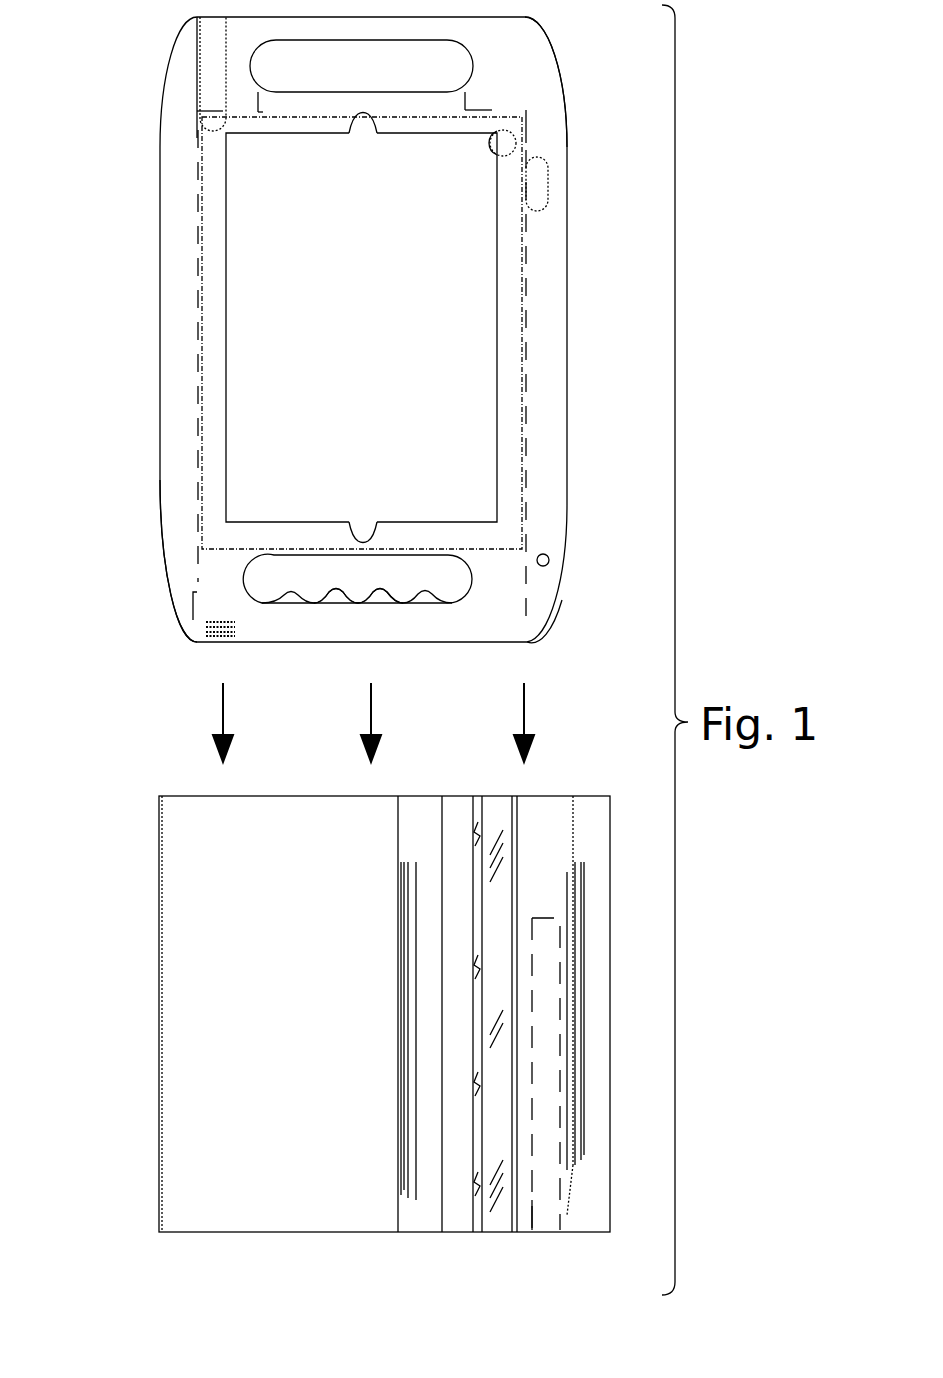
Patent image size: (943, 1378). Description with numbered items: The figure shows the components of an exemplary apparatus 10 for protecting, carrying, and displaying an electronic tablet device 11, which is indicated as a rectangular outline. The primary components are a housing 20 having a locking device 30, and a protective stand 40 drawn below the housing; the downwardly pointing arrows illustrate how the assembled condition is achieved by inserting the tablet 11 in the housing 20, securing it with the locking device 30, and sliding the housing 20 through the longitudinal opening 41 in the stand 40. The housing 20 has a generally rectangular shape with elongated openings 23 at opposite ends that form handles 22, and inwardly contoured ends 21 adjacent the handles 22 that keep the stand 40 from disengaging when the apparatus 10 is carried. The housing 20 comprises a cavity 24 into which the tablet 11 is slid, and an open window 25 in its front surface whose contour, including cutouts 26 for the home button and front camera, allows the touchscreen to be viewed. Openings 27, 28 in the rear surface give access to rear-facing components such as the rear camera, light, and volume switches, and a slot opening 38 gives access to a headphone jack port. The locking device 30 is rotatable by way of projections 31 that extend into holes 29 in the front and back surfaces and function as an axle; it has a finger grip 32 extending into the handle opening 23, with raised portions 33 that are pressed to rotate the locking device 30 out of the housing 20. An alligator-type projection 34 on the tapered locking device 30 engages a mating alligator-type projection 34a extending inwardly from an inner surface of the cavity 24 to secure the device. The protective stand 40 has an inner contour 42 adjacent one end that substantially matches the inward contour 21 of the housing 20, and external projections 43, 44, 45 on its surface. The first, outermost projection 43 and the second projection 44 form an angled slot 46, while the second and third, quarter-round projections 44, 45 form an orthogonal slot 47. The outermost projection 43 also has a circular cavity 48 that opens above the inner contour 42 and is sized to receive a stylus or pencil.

The apparatus 10 is at (149, 677).
The electronic tablet device 11 is at (203, 265).
The housing 20 is at (567, 312).
The inwardly contoured ends 21 is at (556, 601).
The handles 22 is at (577, 61).
The elongated openings 23 is at (367, 321).
The cavity 24 is at (524, 400).
The open window 25 is at (498, 297).
The cutouts 26 is at (364, 132).
The opening 27 is at (551, 172).
The opening 28 is at (492, 150).
The holes 29 is at (576, 538).
The locking device 30 is at (369, 542).
The projections 31 is at (551, 552).
The finger grip 32 is at (357, 603).
The raised portions 33 is at (382, 582).
The alligator-type projection 34 is at (262, 663).
The mating alligator-type projection 34a is at (247, 645).
The slot opening 38 is at (196, 92).
The protective stand 40 is at (611, 1196).
The longitudinal opening 41 is at (161, 1141).
The inner contour 42 is at (162, 1217).
The first outermost projection 43 is at (556, 1035).
The second projection 44 is at (478, 916).
The third quarter-round projection 45 is at (410, 826).
The angled slot 46 is at (497, 911).
The orthogonal slot 47 is at (458, 976).
The circular cavity 48 is at (533, 1212).